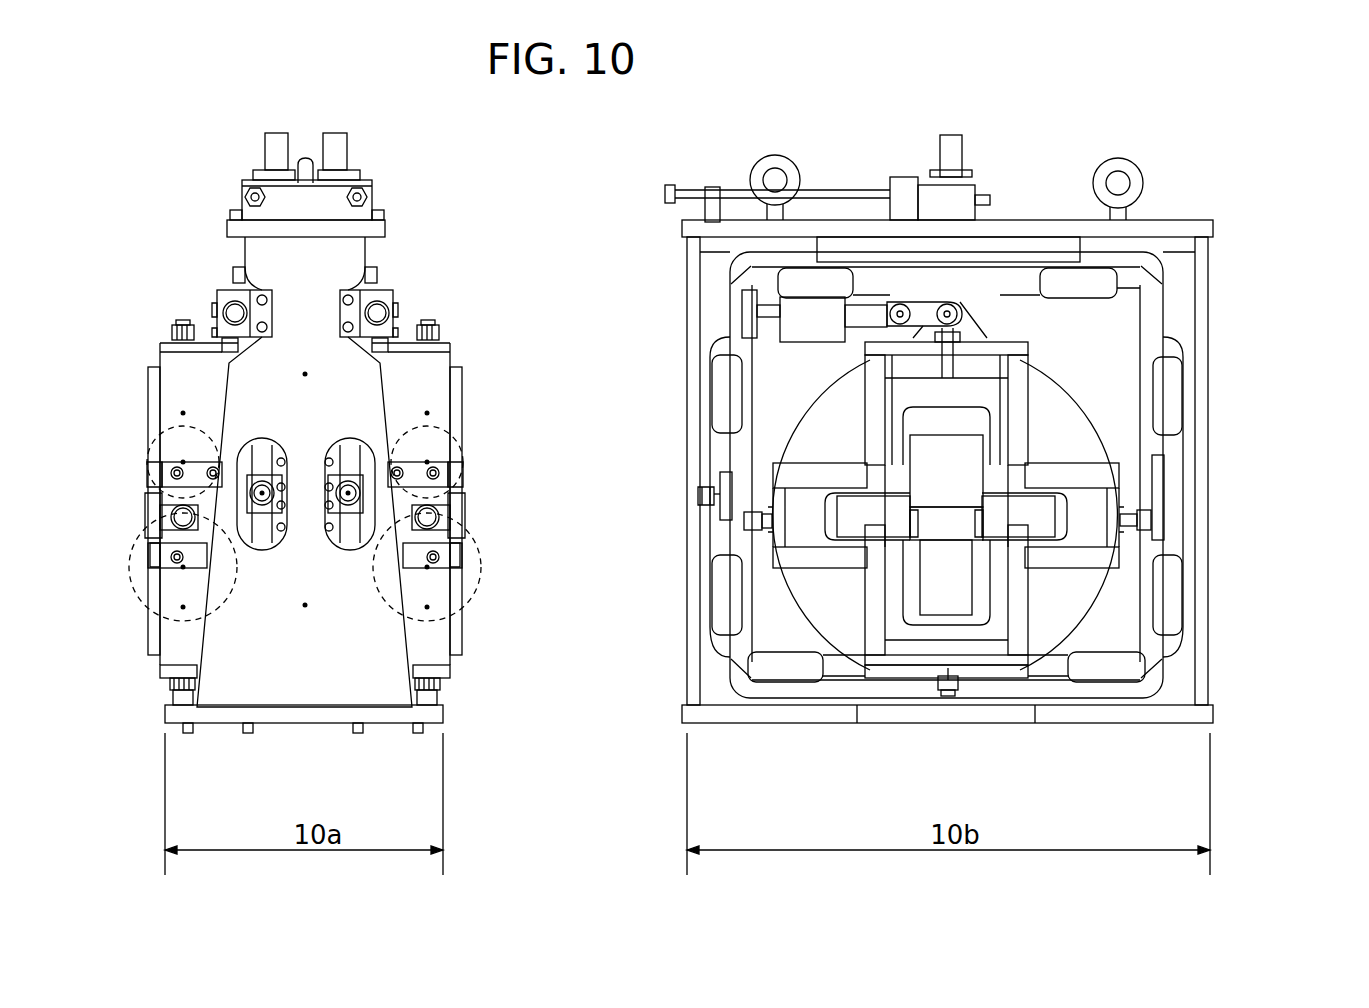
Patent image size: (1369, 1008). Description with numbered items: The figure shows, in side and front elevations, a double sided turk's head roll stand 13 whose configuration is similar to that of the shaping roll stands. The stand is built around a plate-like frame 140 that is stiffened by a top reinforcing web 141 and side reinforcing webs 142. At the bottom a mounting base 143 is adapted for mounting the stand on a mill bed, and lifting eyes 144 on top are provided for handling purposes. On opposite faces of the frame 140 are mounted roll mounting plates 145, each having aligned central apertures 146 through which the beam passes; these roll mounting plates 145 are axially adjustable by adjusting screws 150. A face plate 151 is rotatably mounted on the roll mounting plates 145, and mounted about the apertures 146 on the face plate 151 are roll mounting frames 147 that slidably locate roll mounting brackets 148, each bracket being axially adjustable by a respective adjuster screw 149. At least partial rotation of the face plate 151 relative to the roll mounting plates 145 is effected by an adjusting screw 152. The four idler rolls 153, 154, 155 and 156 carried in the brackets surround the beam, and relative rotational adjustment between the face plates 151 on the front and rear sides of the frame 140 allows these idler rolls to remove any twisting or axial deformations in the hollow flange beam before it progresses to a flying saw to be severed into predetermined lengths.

The turk's head roll stand 13 is at (1233, 166).
The frame 140 is at (1182, 262).
The top reinforcing web 141 is at (378, 228).
The side reinforcing webs 142 is at (267, 256).
The mounting base 143 is at (221, 728).
The lifting eyes 144 is at (304, 158).
The roll mounting plates 145 is at (1120, 333).
The central apertures 146 is at (1065, 660).
The roll mounting frames 147 is at (1065, 478).
The roll mounting brackets 148 is at (1085, 535).
The adjuster screws 149 is at (945, 312).
The adjusting screws 150 is at (950, 195).
The face plate 151 is at (1065, 410).
The adjusting screw 152 is at (748, 318).
The idler roll 153 is at (888, 540).
The idler roll 154 is at (1080, 605).
The idler roll 155 is at (962, 600).
The idler roll 156 is at (937, 450).